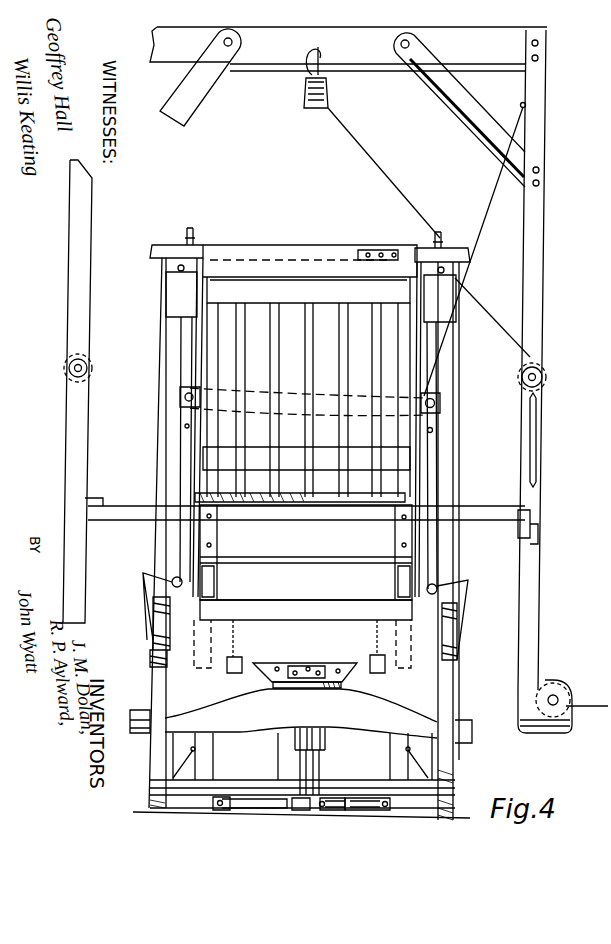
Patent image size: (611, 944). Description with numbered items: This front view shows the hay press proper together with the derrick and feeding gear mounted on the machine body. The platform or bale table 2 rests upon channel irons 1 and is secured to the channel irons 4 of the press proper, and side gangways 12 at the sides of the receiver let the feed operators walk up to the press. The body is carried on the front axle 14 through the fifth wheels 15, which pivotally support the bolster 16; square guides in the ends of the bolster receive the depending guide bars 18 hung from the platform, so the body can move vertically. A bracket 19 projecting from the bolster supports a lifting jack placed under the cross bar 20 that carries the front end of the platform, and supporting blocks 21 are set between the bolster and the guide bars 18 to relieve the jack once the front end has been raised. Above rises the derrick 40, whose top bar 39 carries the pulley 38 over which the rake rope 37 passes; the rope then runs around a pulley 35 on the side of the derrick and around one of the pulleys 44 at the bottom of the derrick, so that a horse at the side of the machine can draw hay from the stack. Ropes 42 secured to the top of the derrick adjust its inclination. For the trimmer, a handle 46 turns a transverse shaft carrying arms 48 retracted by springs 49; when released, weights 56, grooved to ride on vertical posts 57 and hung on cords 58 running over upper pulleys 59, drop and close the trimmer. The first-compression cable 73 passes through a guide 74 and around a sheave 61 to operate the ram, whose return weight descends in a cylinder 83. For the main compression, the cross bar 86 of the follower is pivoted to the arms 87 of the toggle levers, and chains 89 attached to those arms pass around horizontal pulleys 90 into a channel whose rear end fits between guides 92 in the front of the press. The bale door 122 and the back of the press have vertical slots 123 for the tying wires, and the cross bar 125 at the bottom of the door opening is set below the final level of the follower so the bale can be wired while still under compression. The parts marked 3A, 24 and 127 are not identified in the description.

The channel irons 1 is at (217, 586).
The platform or bale table 2 is at (345, 558).
The bar 3A is at (272, 685).
The channel irons of the press proper 4 is at (208, 775).
The side gangways 12 is at (119, 512).
The front axle 14 is at (301, 713).
The fifth wheels 15 is at (311, 688).
The bolster 16 is at (265, 646).
The depending guide bars 18 is at (198, 655).
The bracket 19 is at (323, 662).
The cross bar 20 is at (306, 609).
The supporting blocks 21 is at (379, 673).
The spring strut 24 is at (160, 622).
The pulley 35 is at (546, 377).
The rope 37 is at (396, 182).
The pulley 38 is at (337, 78).
The top bar 39 is at (268, 58).
The derrick 40 is at (540, 212).
The ropes 42 is at (495, 193).
The pulley 44 is at (567, 691).
The handle 46 is at (528, 476).
The arms 48 is at (534, 540).
The springs 49 is at (524, 526).
The weights 56 is at (172, 305).
The vertical posts 57 is at (162, 381).
The cords 58 is at (181, 345).
The upper pulleys 59 is at (192, 236).
The sheave 61 is at (326, 747).
The cable 73 is at (300, 766).
The guide 74 is at (301, 810).
The cylinder 83 is at (320, 760).
The cross bar of the follower 86 is at (444, 399).
The arms of toggle levers 87 is at (438, 426).
The chains 89 is at (217, 810).
The horizontal pulleys 90 is at (354, 810).
The guides 92 is at (338, 810).
The door 122 is at (390, 337).
The vertical slots 123 is at (268, 302).
The cross bar 125 is at (306, 458).
The rail 127 is at (220, 494).